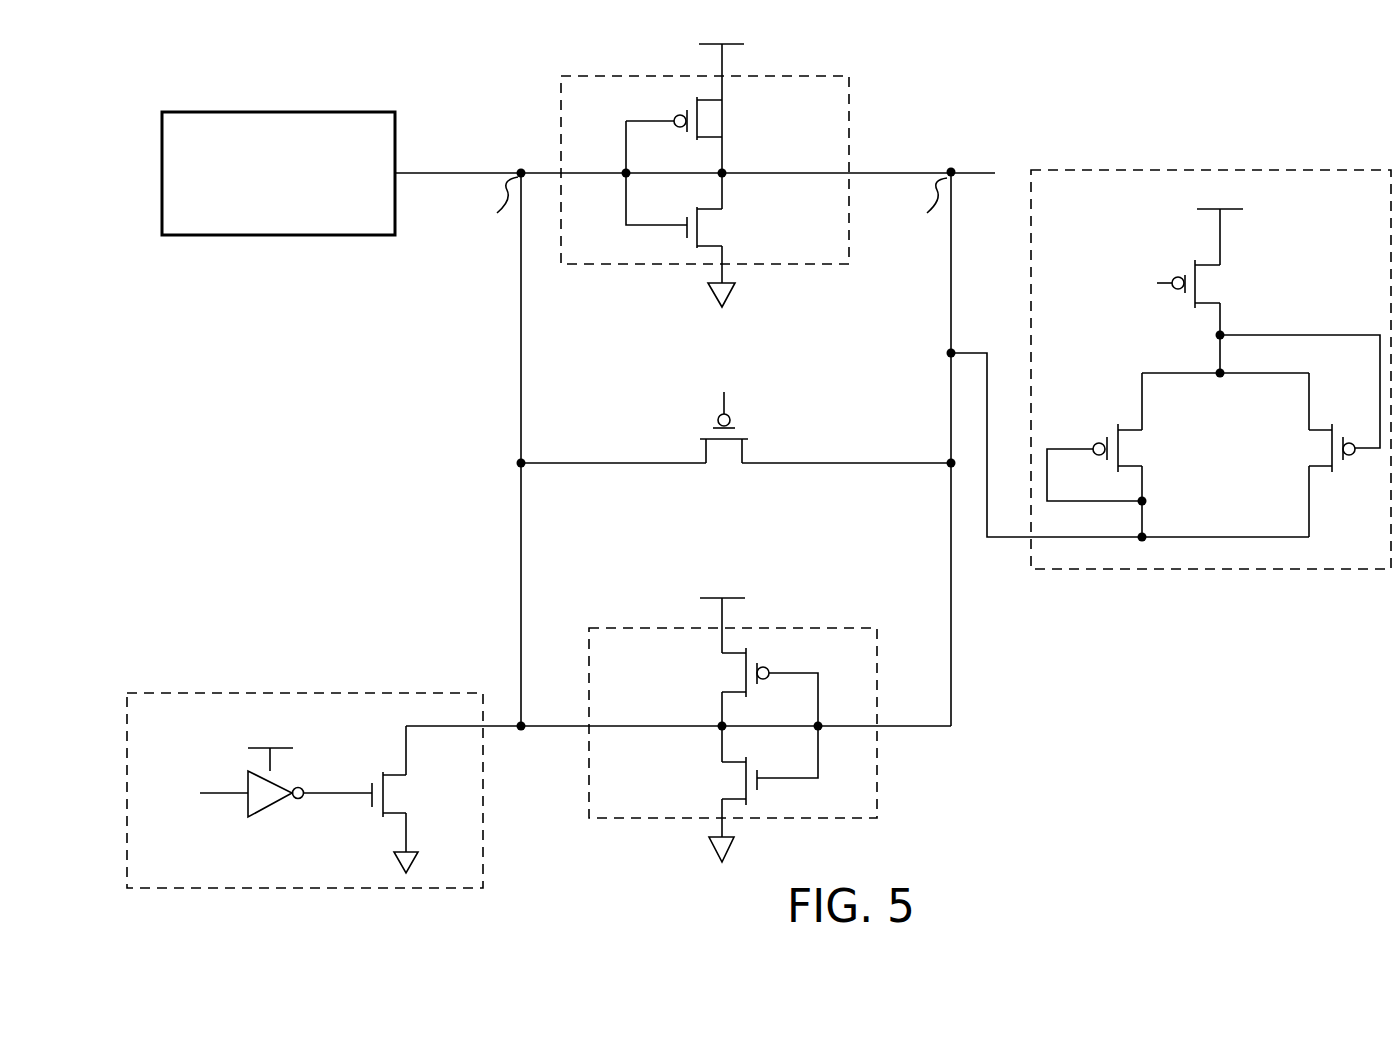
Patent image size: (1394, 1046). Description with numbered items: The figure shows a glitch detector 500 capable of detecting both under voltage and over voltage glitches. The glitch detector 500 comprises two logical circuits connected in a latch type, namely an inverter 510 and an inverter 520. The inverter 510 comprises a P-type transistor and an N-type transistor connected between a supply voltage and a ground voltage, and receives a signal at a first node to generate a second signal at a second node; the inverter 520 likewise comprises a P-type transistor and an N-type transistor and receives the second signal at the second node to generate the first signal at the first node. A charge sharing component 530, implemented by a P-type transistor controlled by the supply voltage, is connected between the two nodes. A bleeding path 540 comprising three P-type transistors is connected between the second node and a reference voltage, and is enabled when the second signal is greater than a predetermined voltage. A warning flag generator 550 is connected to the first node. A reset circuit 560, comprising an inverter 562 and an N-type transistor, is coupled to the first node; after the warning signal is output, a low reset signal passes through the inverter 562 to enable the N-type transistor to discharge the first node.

The glitch detector 500 is at (298, 65).
The inverter 510 is at (849, 98).
The inverter 520 is at (877, 653).
The charge sharing component 530 is at (725, 453).
The bleeding path 540 is at (1332, 170).
The warning flag generator 550 is at (397, 133).
The reset circuit 560 is at (320, 693).
The inverter 562 is at (275, 805).